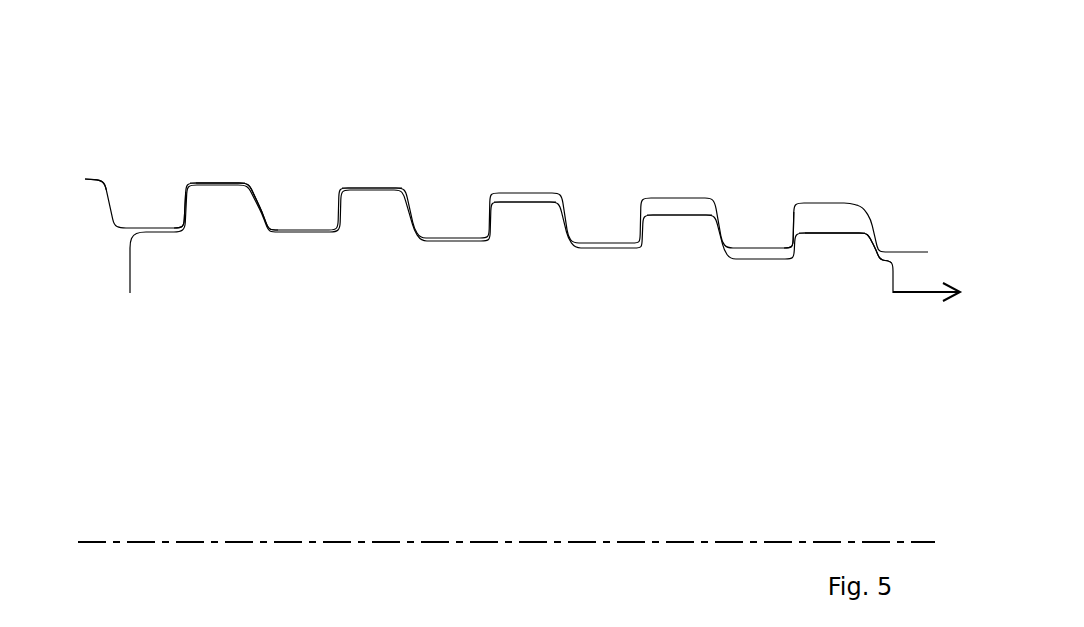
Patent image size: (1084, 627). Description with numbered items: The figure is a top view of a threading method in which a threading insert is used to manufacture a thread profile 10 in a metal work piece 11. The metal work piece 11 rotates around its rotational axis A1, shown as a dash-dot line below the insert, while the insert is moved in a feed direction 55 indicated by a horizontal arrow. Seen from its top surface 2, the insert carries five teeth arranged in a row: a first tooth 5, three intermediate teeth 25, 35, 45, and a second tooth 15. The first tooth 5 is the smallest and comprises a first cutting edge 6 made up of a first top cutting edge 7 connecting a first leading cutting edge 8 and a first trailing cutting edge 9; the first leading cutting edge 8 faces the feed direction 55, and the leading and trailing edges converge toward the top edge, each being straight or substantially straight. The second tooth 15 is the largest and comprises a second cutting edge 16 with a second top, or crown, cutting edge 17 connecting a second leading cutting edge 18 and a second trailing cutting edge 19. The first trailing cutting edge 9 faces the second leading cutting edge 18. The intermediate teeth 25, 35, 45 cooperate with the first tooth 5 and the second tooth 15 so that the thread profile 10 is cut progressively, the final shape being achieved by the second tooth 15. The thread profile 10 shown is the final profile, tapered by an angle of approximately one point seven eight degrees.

The top surface 2 is at (158, 275).
The first tooth 5 is at (848, 327).
The first cutting edge 6 is at (873, 236).
The first top cutting edge 7 is at (838, 235).
The first leading cutting edge 8 is at (878, 255).
The first trailing cutting edge 9 is at (793, 250).
The thread profile 10 is at (104, 183).
The metal work piece 11 is at (506, 173).
The second tooth 15 is at (227, 238).
The second cutting edge 16 is at (243, 183).
The second top cutting edge 17 is at (218, 184).
The second leading cutting edge 18 is at (263, 212).
The second trailing cutting edge 19 is at (183, 212).
The intermediate tooth 25 is at (689, 270).
The intermediate tooth 35 is at (531, 267).
The intermediate tooth 45 is at (385, 245).
The feed direction 55 is at (926, 313).
The rotational axis A1 is at (487, 539).